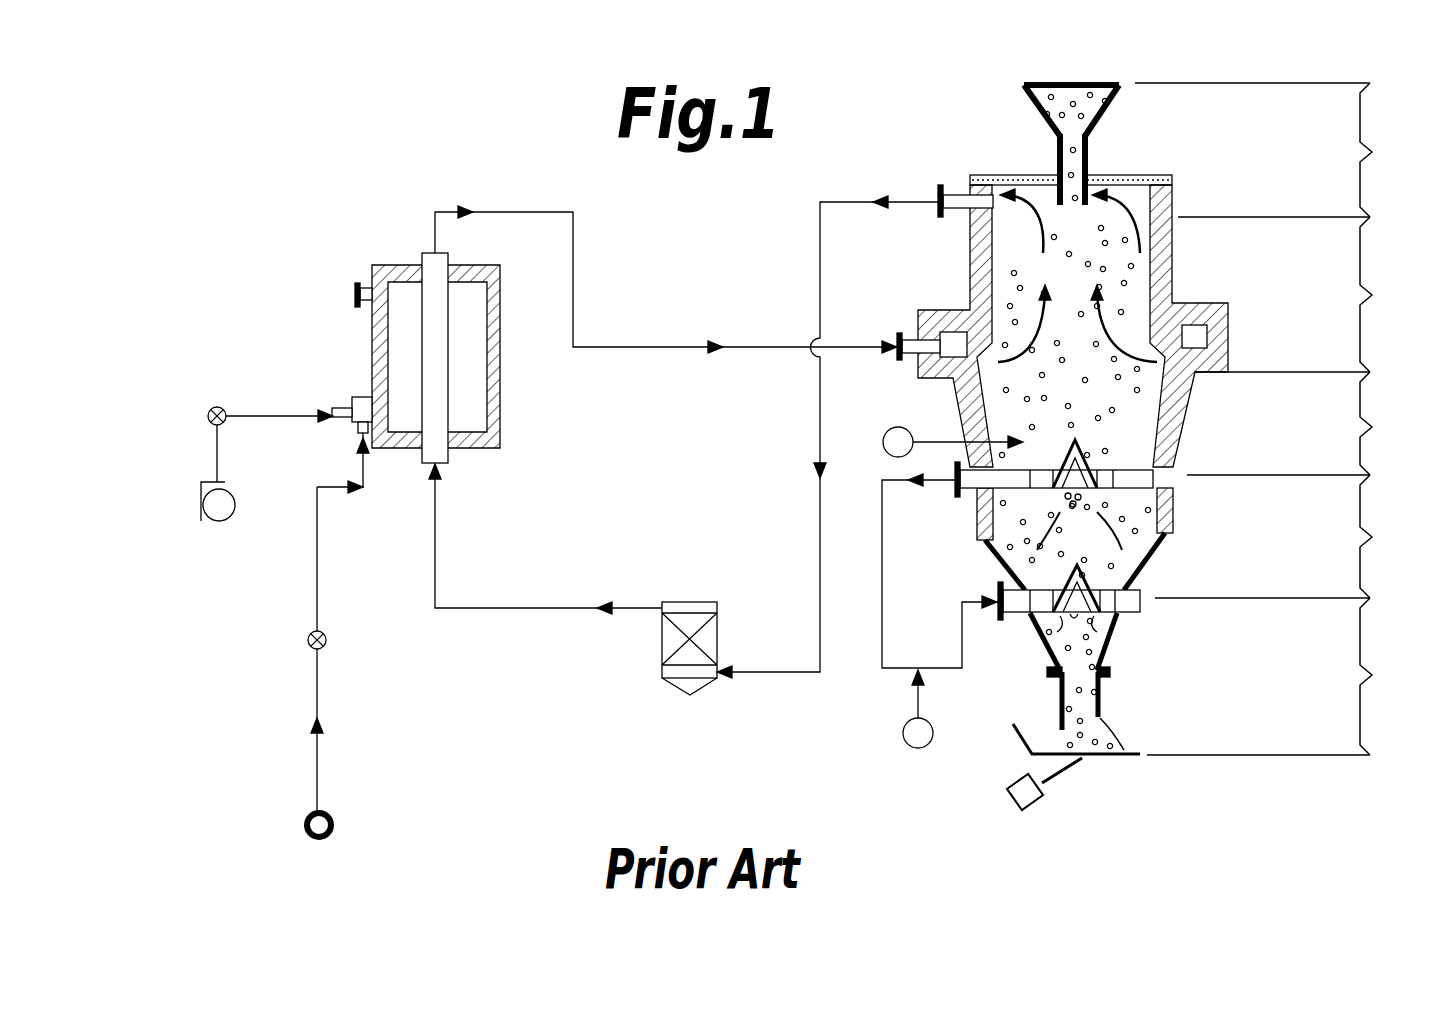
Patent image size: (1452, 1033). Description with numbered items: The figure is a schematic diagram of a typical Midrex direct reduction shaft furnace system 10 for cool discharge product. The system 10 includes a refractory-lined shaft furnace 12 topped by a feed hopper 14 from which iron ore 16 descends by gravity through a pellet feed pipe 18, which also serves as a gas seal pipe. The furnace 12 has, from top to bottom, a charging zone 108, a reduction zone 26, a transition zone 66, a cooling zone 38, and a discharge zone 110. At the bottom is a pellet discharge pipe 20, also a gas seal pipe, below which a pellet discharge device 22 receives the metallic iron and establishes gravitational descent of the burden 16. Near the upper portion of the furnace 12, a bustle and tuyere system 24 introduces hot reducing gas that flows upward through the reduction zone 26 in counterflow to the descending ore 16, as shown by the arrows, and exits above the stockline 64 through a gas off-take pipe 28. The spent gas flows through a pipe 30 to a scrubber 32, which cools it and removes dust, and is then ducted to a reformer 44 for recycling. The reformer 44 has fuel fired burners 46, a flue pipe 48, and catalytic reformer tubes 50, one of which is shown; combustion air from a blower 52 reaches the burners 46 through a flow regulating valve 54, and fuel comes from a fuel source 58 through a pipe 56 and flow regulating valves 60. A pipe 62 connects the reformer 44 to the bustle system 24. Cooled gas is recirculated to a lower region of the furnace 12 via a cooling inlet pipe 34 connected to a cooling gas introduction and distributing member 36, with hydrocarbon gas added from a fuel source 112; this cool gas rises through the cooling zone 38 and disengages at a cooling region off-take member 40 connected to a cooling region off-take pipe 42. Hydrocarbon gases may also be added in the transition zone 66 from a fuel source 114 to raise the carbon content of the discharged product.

The system 10 is at (1245, 182).
The shaft furnace 12 is at (1175, 248).
The feed hopper 14 is at (1108, 108).
The iron ore 16 is at (1070, 87).
The pellet feed pipe 18 is at (1058, 152).
The pellet discharge pipe 20 is at (1098, 695).
The pellet discharge device 22 is at (1110, 757).
The bustle and tuyere system 24 is at (953, 337).
The reduction zone 26 is at (1135, 297).
The gas off-take pipe 28 is at (938, 193).
The pipe 30 is at (818, 273).
The scrubber 32 is at (660, 665).
The cooling inlet pipe 34 is at (1125, 597).
The cooling gas introduction and distributing member 36 is at (1097, 587).
The cooling zone 38 is at (1113, 640).
The cooling region off-take member 40 is at (1143, 473).
The cooling region off-take pipe 42 is at (952, 483).
The reformer 44 is at (383, 267).
The fuel fired burners 46 is at (355, 398).
The flue pipe 48 is at (355, 292).
The catalytic reformer tubes 50 is at (423, 255).
The blower 52 is at (198, 509).
The flow regulating valve 54 is at (207, 415).
The pipe 56 is at (315, 585).
The fuel source 58 is at (306, 825).
The flow regulating valves 60 is at (308, 647).
The pipe 62 is at (503, 210).
The stockline 64 is at (1130, 237).
The transition zone 66 is at (1117, 517).
The charging zone 108 is at (1384, 146).
The discharge zone 110 is at (1377, 670).
The fuel source 112 is at (906, 746).
The fuel source 114 is at (889, 428).